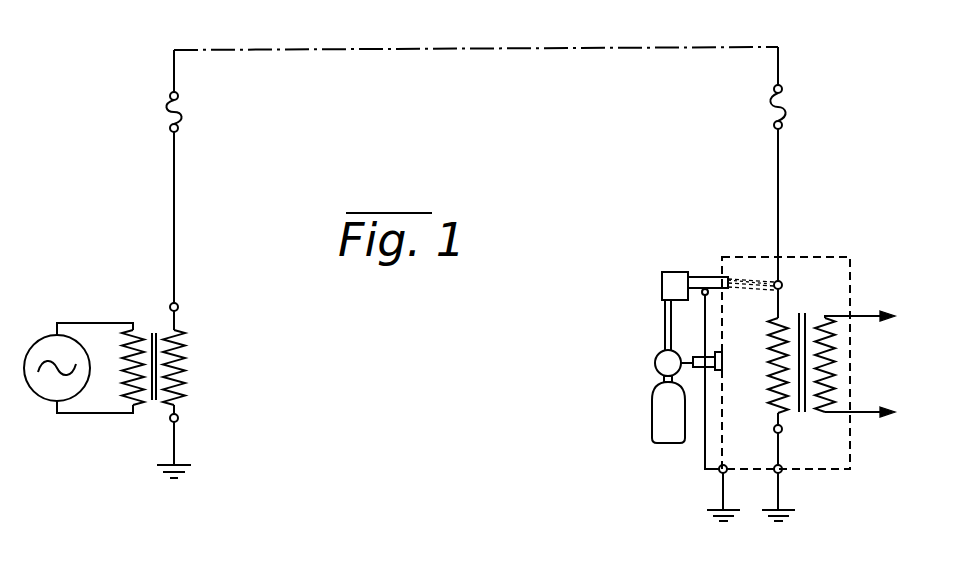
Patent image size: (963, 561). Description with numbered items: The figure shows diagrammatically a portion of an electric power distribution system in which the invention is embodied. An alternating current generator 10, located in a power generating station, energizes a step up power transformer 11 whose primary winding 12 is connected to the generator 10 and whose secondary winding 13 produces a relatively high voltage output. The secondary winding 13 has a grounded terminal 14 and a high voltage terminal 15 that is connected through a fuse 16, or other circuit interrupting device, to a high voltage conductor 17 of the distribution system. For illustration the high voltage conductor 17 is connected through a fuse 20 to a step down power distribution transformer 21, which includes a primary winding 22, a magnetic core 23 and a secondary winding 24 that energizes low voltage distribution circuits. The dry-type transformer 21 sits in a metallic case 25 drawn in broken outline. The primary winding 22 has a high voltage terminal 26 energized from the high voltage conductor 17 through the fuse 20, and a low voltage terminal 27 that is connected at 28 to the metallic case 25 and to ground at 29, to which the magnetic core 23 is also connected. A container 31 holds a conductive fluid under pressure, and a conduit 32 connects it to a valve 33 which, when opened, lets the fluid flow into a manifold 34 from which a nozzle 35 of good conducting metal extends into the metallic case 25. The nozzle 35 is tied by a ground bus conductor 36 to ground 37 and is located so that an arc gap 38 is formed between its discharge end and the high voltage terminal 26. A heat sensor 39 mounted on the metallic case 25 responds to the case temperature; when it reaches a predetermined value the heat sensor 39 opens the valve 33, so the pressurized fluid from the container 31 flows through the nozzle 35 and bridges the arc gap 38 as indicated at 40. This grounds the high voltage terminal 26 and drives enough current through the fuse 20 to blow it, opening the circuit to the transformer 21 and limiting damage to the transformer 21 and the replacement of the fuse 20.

The alternating current generator 10 is at (40, 402).
The step up power transformer 11 is at (149, 337).
The primary winding 12 is at (123, 373).
The secondary winding 13 is at (182, 357).
The grounded terminal 14 is at (180, 418).
The high voltage terminal 15 is at (180, 305).
The fuse 16 is at (180, 115).
The high voltage conductor 17 is at (334, 50).
The fuse 20 is at (782, 110).
The step down power distribution transformer 21 is at (816, 363).
The primary winding 22 is at (770, 377).
The magnetic core 23 is at (802, 413).
The secondary winding 24 is at (833, 372).
The metallic case 25 is at (830, 255).
The high voltage terminal 26 is at (783, 283).
The low voltage terminal 27 is at (773, 433).
The connection to metallic case 28 is at (780, 472).
The ground 29 is at (790, 512).
The container 31 is at (652, 425).
The conduit 32 is at (662, 375).
The valve 33 is at (658, 353).
The manifold 34 is at (662, 282).
The nozzle 35 is at (700, 275).
The ground bus conductor 36 is at (703, 450).
The ground 37 is at (718, 508).
The arc gap 38 is at (768, 268).
The heat sensor 39 is at (723, 357).
The bridging of arc gap 40 is at (755, 292).